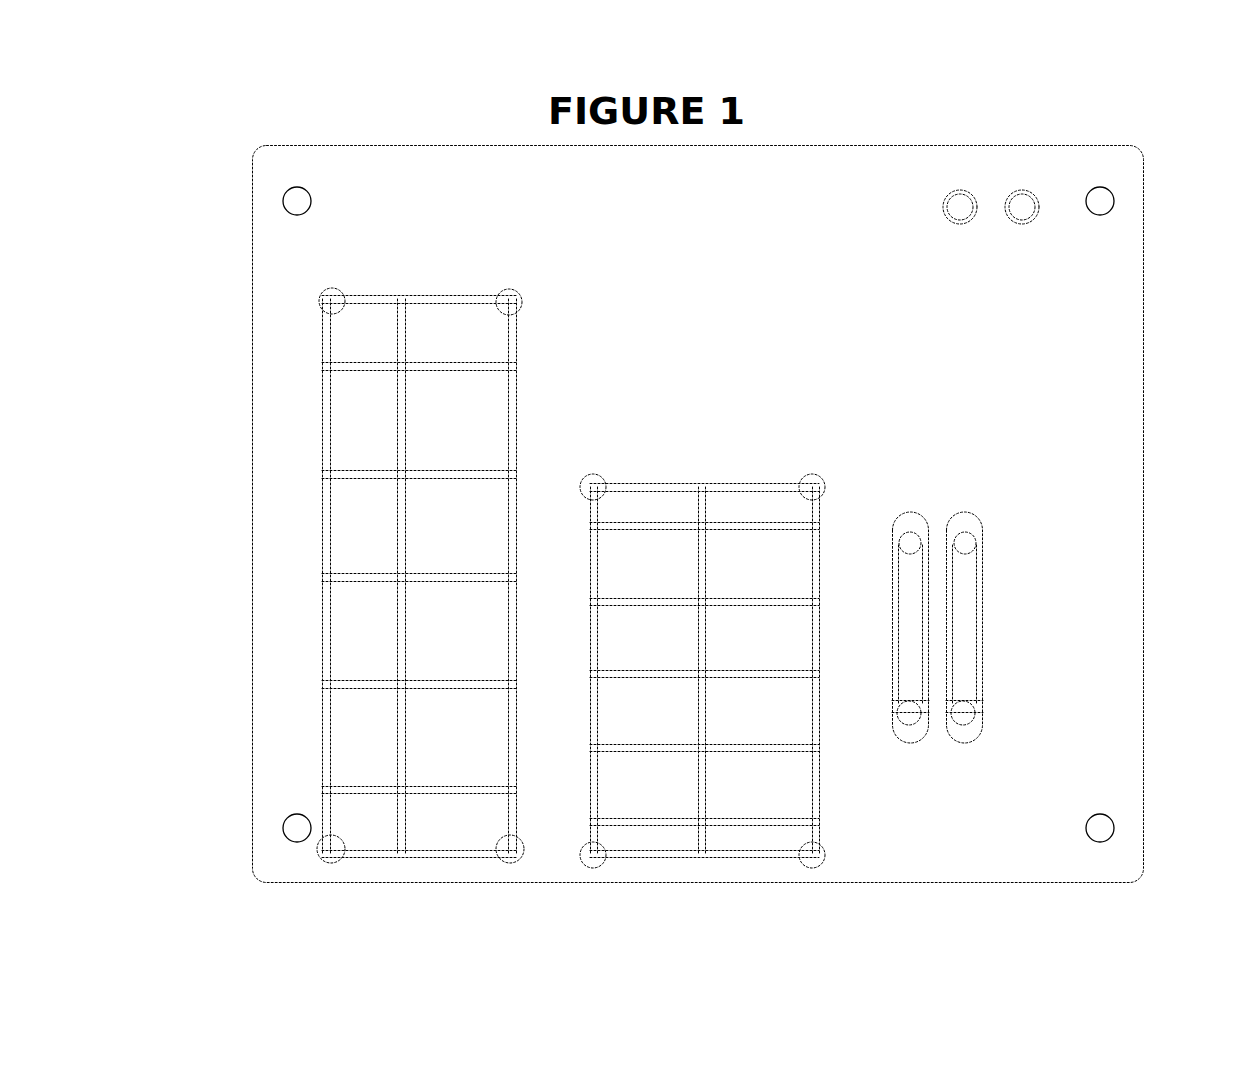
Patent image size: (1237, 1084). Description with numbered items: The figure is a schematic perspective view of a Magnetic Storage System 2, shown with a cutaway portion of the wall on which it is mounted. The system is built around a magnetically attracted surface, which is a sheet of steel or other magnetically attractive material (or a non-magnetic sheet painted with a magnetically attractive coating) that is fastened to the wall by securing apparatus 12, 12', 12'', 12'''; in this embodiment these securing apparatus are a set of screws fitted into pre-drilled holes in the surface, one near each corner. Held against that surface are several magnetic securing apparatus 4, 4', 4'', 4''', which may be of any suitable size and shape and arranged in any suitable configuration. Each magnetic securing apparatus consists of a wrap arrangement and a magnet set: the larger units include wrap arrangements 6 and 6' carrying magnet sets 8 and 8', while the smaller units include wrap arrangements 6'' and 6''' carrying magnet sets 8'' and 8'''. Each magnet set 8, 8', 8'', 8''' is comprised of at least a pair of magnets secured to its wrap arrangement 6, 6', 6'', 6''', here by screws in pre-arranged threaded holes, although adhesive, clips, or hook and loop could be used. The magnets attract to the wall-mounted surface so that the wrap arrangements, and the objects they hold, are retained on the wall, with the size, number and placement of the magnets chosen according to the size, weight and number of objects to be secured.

The Magnetic Storage System 2 is at (232, 160).
The securing apparatus 12 is at (253, 203).
The securing apparatus 12' is at (253, 831).
The securing apparatus 12'' is at (1156, 203).
The securing apparatus 12''' is at (1159, 832).
The magnetic securing apparatus 4 is at (360, 566).
The wrap arrangement 6 is at (359, 271).
The magnet set 8 is at (360, 575).
The magnetic securing apparatus 4' is at (746, 643).
The wrap arrangement 6' is at (759, 826).
The magnet set 8' is at (702, 623).
The wrap arrangement 6'' is at (892, 627).
The wrap arrangement 6''' is at (1004, 627).
The magnetic securing apparatus 4'' is at (887, 729).
The magnetic securing apparatus 4''' is at (932, 754).
The magnet set 8'' is at (966, 544).
The magnet set 8''' is at (956, 249).